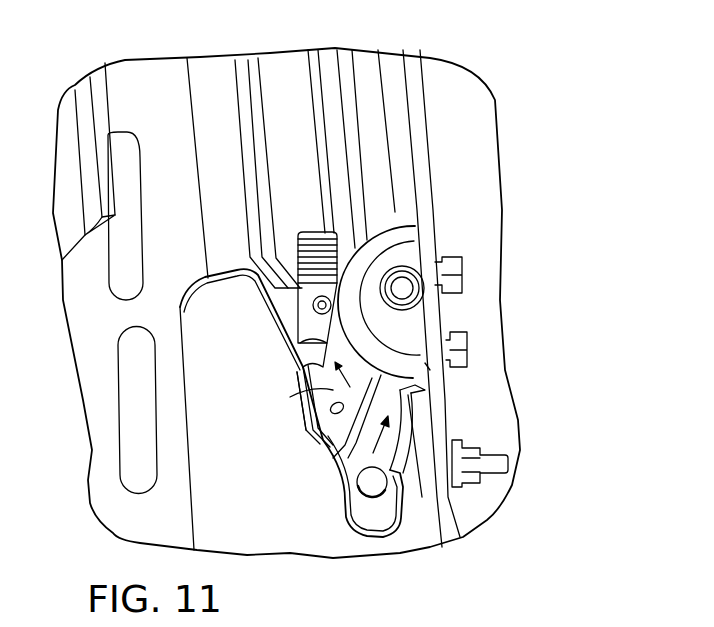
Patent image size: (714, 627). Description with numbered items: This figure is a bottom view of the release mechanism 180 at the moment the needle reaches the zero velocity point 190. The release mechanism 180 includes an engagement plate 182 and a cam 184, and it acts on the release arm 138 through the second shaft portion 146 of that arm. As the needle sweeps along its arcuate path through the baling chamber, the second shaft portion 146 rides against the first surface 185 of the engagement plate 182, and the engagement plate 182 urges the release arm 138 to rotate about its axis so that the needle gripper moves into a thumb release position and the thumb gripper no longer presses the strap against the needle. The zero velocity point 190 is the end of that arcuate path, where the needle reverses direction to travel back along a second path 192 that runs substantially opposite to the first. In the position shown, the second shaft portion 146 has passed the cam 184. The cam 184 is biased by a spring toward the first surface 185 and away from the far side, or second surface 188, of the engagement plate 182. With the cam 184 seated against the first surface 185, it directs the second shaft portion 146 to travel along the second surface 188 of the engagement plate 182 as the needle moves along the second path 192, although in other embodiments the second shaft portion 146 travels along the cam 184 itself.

The release mechanism 180 is at (338, 39).
The release arm 138 is at (306, 226).
The engagement plate 182 is at (282, 506).
The cam 184 is at (290, 397).
The first surface 185 is at (305, 434).
The second surface 188 is at (410, 412).
The zero velocity point 190 is at (358, 513).
The second path 192 is at (428, 442).
The second shaft portion 146 is at (418, 513).